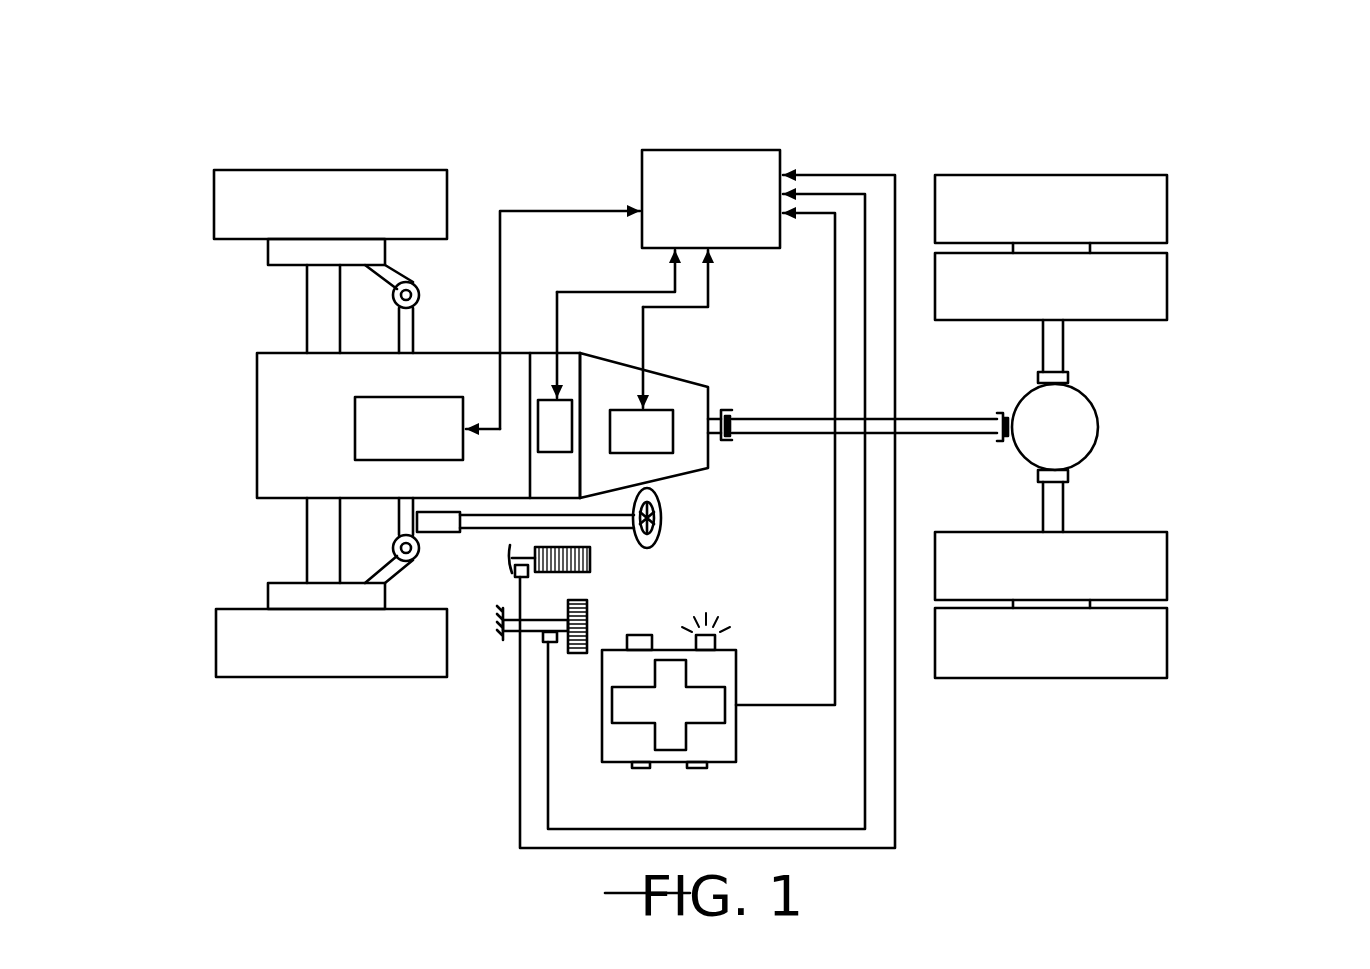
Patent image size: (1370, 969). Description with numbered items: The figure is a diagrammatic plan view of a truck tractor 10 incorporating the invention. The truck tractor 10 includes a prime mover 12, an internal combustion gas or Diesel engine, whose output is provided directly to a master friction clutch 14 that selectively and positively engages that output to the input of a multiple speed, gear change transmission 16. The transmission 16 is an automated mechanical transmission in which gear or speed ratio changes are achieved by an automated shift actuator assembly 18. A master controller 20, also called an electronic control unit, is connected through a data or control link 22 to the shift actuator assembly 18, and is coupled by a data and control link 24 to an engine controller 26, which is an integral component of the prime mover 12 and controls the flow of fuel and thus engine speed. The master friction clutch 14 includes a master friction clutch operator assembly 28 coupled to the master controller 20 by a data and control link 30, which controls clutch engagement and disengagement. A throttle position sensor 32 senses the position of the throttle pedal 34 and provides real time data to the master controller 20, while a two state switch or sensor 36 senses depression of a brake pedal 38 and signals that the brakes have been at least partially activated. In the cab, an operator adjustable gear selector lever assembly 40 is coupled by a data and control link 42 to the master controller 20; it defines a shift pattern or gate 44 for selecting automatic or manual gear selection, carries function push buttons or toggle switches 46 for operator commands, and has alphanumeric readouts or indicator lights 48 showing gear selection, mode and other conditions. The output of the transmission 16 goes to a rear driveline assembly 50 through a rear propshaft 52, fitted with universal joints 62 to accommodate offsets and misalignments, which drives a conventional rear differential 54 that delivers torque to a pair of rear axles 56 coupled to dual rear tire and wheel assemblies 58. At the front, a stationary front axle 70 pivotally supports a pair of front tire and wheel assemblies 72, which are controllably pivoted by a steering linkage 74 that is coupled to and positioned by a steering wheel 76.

The truck tractor 10 is at (1020, 93).
The prime mover 12 is at (268, 478).
The master friction clutch 14 is at (540, 372).
The multiple speed, gear change transmission 16 is at (692, 455).
The shift actuator assembly 18 is at (677, 427).
The master controller 20 is at (764, 147).
The data or control link 22 is at (710, 300).
The data and control link 24 is at (527, 211).
The engine controller 26 is at (405, 428).
The master friction clutch operator assembly 28 is at (556, 428).
The data and control link 30 is at (605, 291).
The throttle position sensor 32 is at (510, 572).
The throttle pedal 34 is at (590, 560).
The two state switch or sensor 36 is at (546, 642).
The brake pedal 38 is at (588, 628).
The gear selector lever assembly 40 is at (716, 607).
The data and control link 42 is at (833, 500).
The shift pattern or gate 44 is at (695, 725).
The function push buttons or toggle switches 46 is at (641, 768).
The alphanumeric readouts or indicator lights 48 is at (706, 650).
The rear driveline assembly 50 is at (1005, 723).
The rear propshaft 52 is at (911, 412).
The rear differential 54 is at (1075, 428).
The rear axles 56 is at (1062, 345).
The rear tire and wheel assemblies 58 is at (1214, 270).
The universal joints 62 is at (733, 410).
The stationary front axle 70 is at (318, 332).
The front tire and wheel assemblies 72 is at (363, 169).
The steering linkage 74 is at (432, 550).
The steering wheel 76 is at (663, 522).